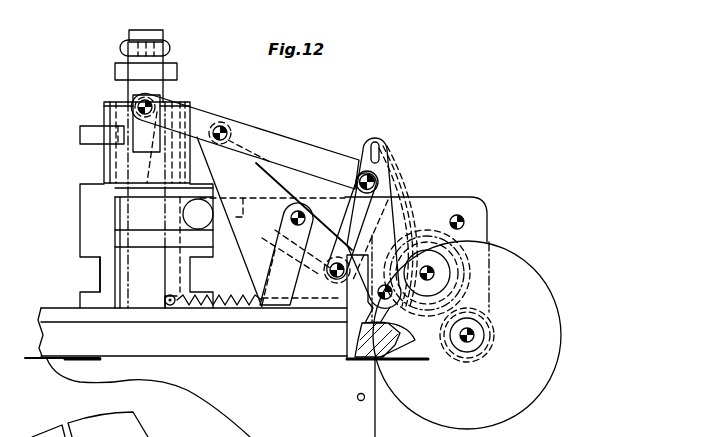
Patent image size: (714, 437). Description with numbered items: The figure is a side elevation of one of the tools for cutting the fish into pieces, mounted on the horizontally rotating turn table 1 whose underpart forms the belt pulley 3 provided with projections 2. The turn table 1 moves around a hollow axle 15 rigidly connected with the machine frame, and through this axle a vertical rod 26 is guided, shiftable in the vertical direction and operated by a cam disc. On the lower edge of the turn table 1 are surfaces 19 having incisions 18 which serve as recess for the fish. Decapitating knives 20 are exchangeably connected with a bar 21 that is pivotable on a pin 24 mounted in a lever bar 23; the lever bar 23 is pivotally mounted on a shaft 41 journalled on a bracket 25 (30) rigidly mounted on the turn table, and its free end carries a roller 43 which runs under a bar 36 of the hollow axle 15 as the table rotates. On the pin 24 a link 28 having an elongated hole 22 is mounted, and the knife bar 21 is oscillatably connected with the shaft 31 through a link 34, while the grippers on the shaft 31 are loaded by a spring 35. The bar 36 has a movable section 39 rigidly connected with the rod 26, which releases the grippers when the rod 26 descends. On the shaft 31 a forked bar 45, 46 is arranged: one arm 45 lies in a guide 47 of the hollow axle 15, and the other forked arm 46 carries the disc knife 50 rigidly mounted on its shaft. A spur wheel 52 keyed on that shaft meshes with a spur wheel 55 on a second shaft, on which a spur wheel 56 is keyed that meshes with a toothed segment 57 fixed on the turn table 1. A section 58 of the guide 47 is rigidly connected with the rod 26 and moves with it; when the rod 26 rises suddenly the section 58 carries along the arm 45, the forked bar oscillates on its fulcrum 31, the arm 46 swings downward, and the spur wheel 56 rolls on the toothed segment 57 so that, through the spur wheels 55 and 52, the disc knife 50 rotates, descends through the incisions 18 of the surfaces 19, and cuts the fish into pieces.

The turn table 1 is at (55, 330).
The projections 2 is at (357, 397).
The belt pulley 3 is at (368, 421).
The hollow axle 15 is at (88, 212).
The incisions 18 is at (141, 398).
The surfaces 19 is at (47, 360).
The decapitating knives 20 is at (347, 334).
The bar 21 is at (382, 228).
The elongated hole 22 is at (382, 149).
The lever bar 23 is at (272, 146).
The pin 24 is at (386, 173).
The bracket 25 is at (277, 180).
The vertical rod 26 is at (135, 87).
The link 28 is at (368, 151).
The bracket 30 is at (290, 258).
The shaft 31 is at (291, 216).
The link 34 is at (343, 231).
The spring 35 is at (239, 300).
The bar 36 is at (90, 133).
The movable section 39 is at (115, 72).
The shaft 41 is at (222, 130).
The roller 43 is at (163, 103).
The arm 45 is at (211, 222).
The forked arm 46 is at (456, 208).
The guide 47 is at (107, 270).
The disc knife 50 is at (530, 289).
The spur wheel 52 is at (490, 318).
The spur wheel 55 is at (470, 251).
The spur wheel 56 is at (458, 275).
The toothed segment 57 is at (402, 190).
The section 58 is at (128, 231).